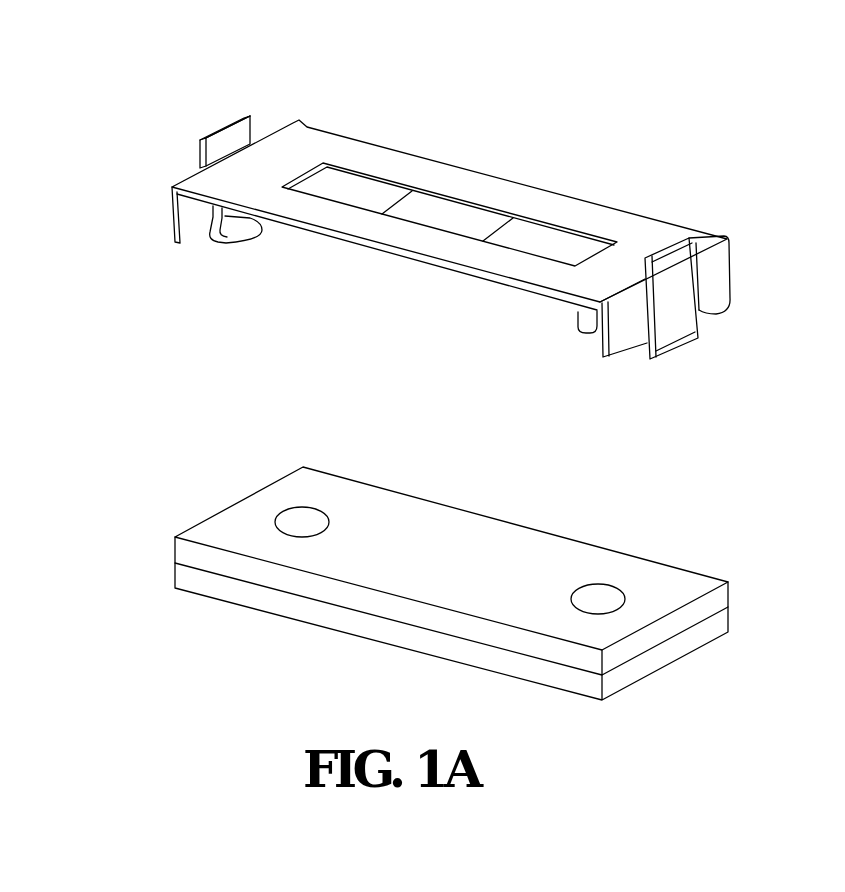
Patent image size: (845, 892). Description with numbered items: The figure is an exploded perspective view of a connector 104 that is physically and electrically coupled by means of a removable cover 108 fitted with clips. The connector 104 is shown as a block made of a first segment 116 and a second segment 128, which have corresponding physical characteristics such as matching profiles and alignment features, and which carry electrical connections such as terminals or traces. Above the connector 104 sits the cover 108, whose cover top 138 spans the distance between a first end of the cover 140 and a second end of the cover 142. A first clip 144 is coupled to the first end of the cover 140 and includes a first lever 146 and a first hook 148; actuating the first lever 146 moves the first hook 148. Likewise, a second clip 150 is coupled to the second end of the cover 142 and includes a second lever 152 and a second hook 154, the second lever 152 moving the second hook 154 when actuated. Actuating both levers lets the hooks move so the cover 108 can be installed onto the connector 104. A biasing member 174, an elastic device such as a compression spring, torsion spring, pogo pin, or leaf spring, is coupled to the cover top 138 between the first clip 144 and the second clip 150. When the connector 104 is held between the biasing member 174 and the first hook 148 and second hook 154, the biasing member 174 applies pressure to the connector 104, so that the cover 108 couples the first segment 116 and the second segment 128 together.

The connector 104 is at (195, 505).
The cover 108 is at (682, 178).
The first segment 116 is at (507, 640).
The second segment 128 is at (432, 647).
The cover top 138 is at (570, 208).
The first end of the cover 140 is at (160, 163).
The second end of the cover 142 is at (752, 274).
The first clip 144 is at (198, 150).
The first lever 146 is at (246, 128).
The first hook 148 is at (205, 246).
The second clip 150 is at (677, 321).
The second lever 152 is at (697, 247).
The second hook 154 is at (650, 362).
The biasing member 174 is at (443, 205).